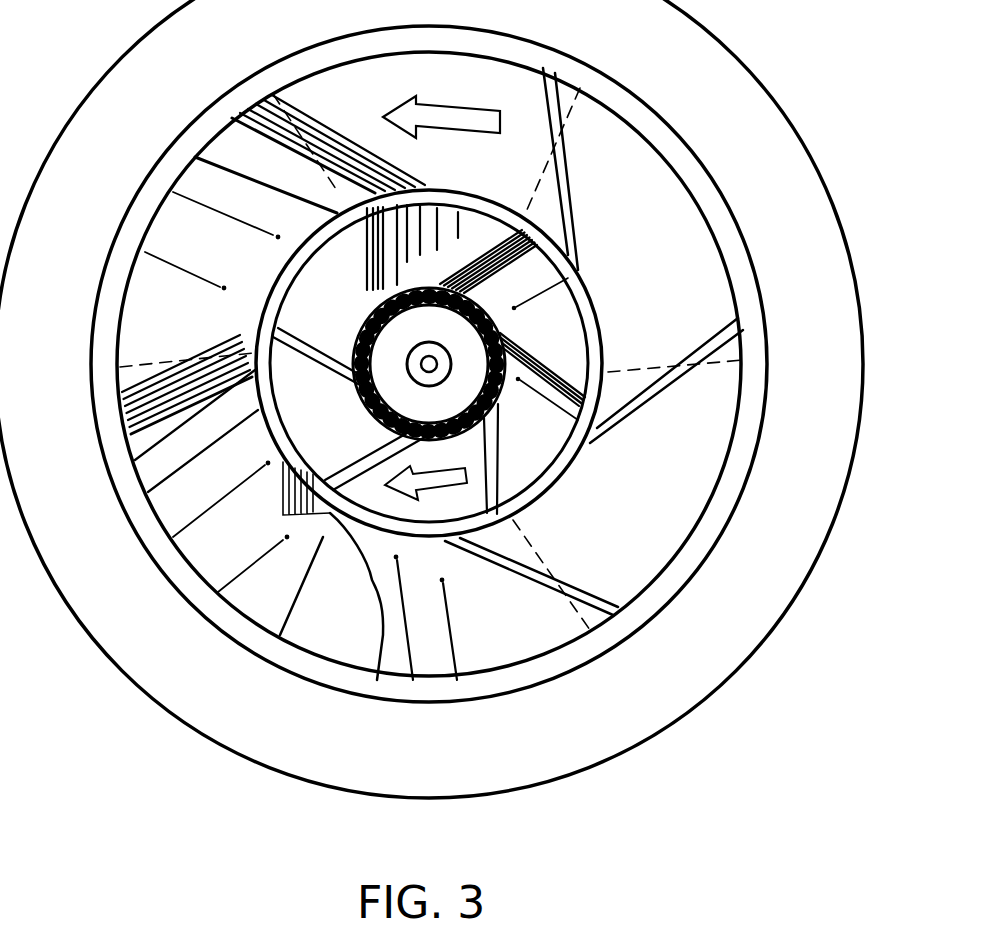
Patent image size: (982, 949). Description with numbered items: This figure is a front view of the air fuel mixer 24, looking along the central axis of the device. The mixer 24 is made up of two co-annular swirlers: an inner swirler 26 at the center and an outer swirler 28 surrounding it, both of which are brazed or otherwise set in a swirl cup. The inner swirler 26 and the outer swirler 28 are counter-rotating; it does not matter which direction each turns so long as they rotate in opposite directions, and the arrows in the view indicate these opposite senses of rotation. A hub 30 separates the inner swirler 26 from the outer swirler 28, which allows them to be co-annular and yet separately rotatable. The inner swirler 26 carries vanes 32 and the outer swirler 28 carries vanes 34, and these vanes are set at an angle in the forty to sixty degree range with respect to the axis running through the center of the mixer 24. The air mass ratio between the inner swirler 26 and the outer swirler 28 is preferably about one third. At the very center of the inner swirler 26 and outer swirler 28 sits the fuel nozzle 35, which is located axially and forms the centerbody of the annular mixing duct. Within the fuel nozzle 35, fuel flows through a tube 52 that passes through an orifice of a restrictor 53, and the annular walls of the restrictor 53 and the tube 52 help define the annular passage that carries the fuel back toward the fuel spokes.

The mixer 24 is at (668, 55).
The inner swirler 26 is at (600, 283).
The outer swirler 28 is at (176, 115).
The hub 30 is at (553, 483).
The vanes 32 is at (352, 285).
The vanes 34 is at (650, 163).
The fuel nozzle 35 is at (358, 356).
The tube 52 is at (423, 377).
The restrictor 53 is at (384, 342).